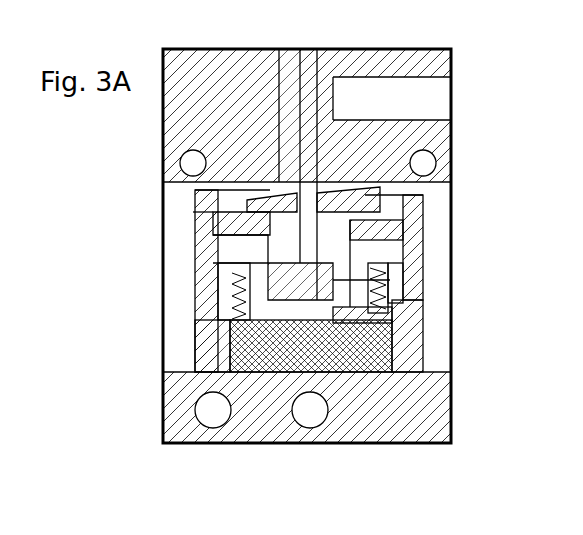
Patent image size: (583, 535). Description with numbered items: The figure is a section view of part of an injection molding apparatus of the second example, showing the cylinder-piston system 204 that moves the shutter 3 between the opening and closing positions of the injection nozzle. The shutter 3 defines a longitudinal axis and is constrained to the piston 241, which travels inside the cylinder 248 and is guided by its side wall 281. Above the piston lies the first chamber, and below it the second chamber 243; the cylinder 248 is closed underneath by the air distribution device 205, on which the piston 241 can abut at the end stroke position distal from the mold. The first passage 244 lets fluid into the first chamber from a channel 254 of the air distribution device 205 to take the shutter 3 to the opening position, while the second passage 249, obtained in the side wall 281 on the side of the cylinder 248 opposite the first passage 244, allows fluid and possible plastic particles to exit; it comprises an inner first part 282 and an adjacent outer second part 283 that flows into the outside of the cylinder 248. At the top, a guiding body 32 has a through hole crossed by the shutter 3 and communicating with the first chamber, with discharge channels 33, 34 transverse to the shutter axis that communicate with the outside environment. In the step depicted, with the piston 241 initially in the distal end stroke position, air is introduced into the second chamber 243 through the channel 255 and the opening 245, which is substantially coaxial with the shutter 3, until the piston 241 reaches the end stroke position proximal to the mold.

The shutter 3 is at (307, 163).
The guiding body 32 is at (293, 160).
The discharge channel 33 is at (258, 205).
The discharge channel 34 is at (355, 200).
The cylinder-piston system 204 is at (440, 262).
The second passage 249 is at (418, 295).
The piston 241 is at (278, 280).
The cylinder 248 is at (212, 304).
The second chamber 243 is at (235, 358).
The first passage 244 is at (210, 365).
The outer second part 283 is at (405, 312).
The inner first part 282 is at (390, 314).
The side wall 281 is at (420, 345).
The air distribution device 205 is at (437, 433).
The opening 245 is at (307, 378).
The channel 254 is at (208, 407).
The channel 255 is at (310, 410).